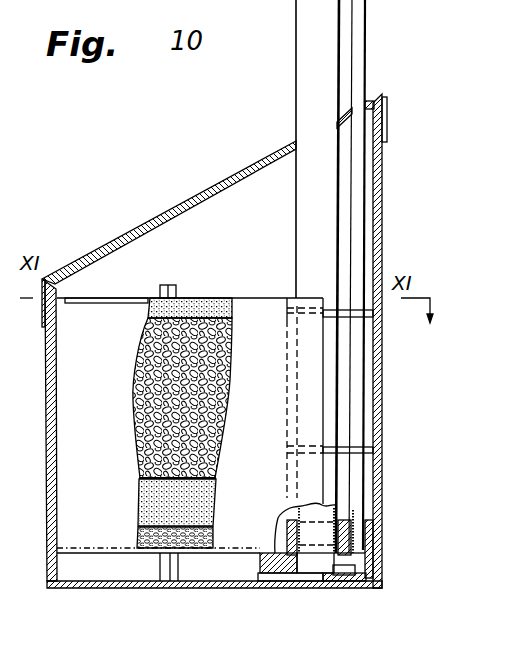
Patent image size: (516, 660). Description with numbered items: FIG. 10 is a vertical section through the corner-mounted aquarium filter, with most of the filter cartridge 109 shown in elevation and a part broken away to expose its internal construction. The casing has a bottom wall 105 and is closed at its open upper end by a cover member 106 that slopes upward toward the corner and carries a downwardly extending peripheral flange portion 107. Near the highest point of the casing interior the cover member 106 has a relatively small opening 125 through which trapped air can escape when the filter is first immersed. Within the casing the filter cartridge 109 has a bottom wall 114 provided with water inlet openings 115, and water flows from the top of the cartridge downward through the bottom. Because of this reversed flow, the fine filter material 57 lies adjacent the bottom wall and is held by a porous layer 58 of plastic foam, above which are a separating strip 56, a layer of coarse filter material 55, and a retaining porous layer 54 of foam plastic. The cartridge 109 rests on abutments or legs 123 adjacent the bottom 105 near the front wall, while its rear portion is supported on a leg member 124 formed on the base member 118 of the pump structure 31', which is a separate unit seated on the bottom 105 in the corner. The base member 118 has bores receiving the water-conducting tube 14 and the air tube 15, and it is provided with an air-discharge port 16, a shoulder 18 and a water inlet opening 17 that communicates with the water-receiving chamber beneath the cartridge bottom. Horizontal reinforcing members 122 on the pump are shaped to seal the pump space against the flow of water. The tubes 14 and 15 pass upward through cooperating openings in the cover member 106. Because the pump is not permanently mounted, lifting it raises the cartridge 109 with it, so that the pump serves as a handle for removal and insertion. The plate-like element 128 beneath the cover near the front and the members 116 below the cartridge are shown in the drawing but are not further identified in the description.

The cover member 106 is at (180, 203).
The relatively small opening 125 is at (368, 102).
The downwardly extending peripheral flange portion 107 is at (388, 119).
The side wall 31' is at (398, 341).
The top plate 128 is at (95, 298).
The retaining porous layer 54 is at (206, 298).
The bottom wall 114 is at (259, 292).
The horizontal reinforcing members 122 is at (357, 318).
The layer of coarse filter material 55 is at (232, 366).
The separating strip 56 is at (217, 478).
The fine filter material 57 is at (140, 492).
The porous layer 58 is at (147, 540).
The filter cartridge 109 is at (73, 545).
The abutments or legs 123 is at (78, 558).
The support legs 116 is at (202, 553).
The bottom wall 105 is at (229, 589).
The water-conducting tube 14 is at (333, 477).
The air tube 15 is at (358, 484).
The leg member 124 is at (257, 550).
The air-discharge port 16 is at (356, 563).
The water inlet openings 115 is at (230, 553).
The water inlet opening 17 is at (308, 582).
The shoulder 18 is at (330, 588).
The base member 118 is at (352, 572).